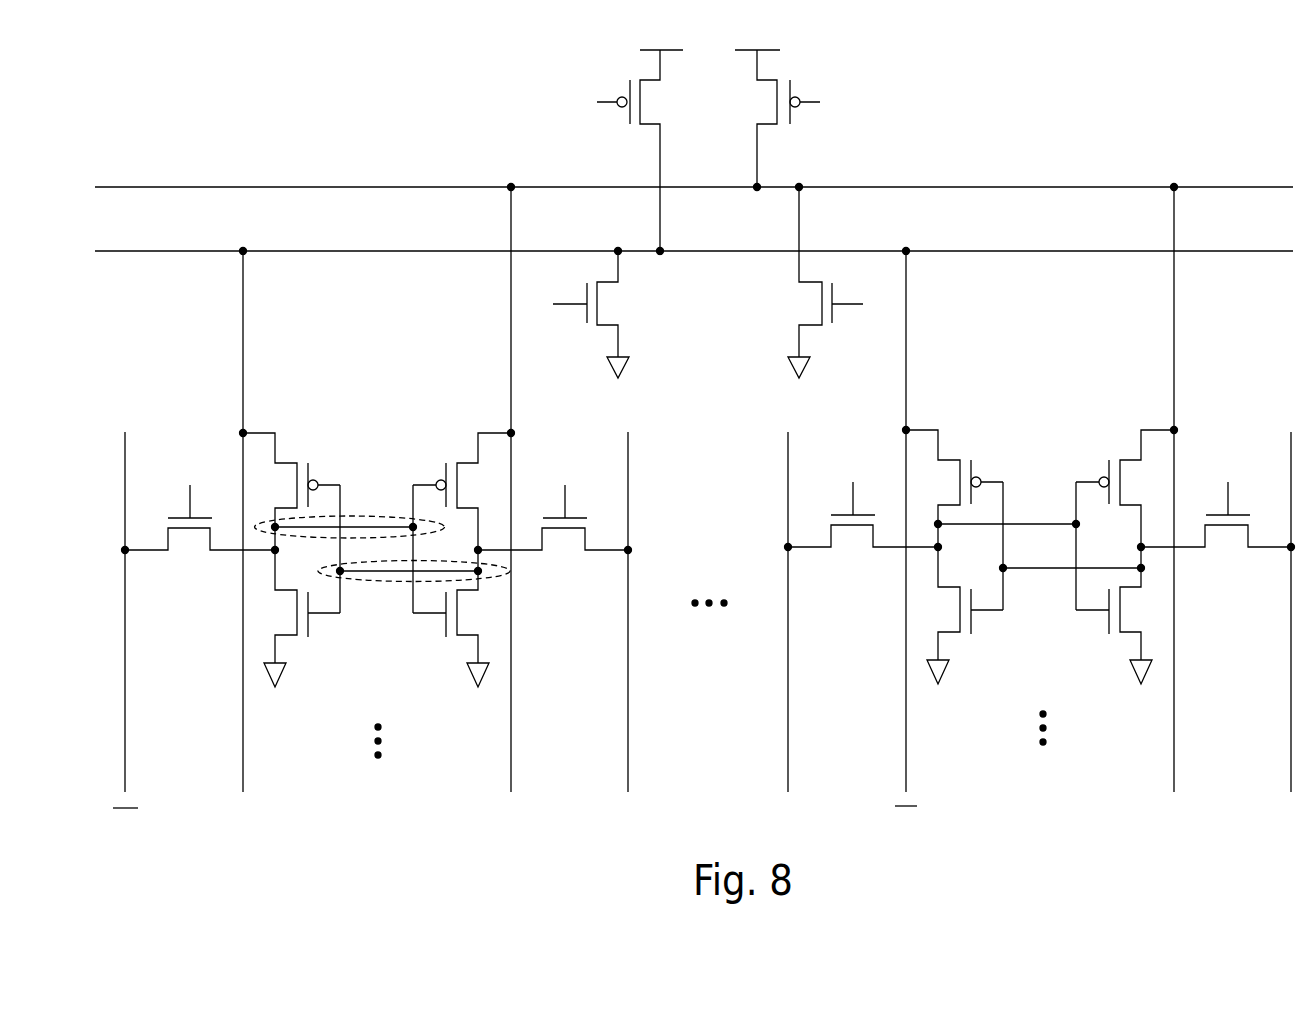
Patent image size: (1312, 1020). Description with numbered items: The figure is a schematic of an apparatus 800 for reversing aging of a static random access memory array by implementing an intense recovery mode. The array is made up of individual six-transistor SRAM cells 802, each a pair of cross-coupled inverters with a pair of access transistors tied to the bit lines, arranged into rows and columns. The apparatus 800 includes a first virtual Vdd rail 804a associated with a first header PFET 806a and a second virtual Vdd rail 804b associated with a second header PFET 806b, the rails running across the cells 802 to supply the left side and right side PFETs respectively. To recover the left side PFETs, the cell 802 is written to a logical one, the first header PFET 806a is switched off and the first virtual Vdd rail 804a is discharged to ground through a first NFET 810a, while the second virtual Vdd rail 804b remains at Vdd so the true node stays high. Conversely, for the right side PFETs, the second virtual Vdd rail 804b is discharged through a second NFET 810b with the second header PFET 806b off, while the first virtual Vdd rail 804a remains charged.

The apparatus 800 is at (203, 92).
The SRAM cell 802 is at (201, 400).
The first virtual Vdd rail 804a is at (352, 250).
The second virtual Vdd rail 804b is at (330, 187).
The first header PFET 806a is at (655, 125).
The second header PFET 806b is at (768, 125).
The first NFET 810a is at (613, 327).
The second NFET 810b is at (810, 327).